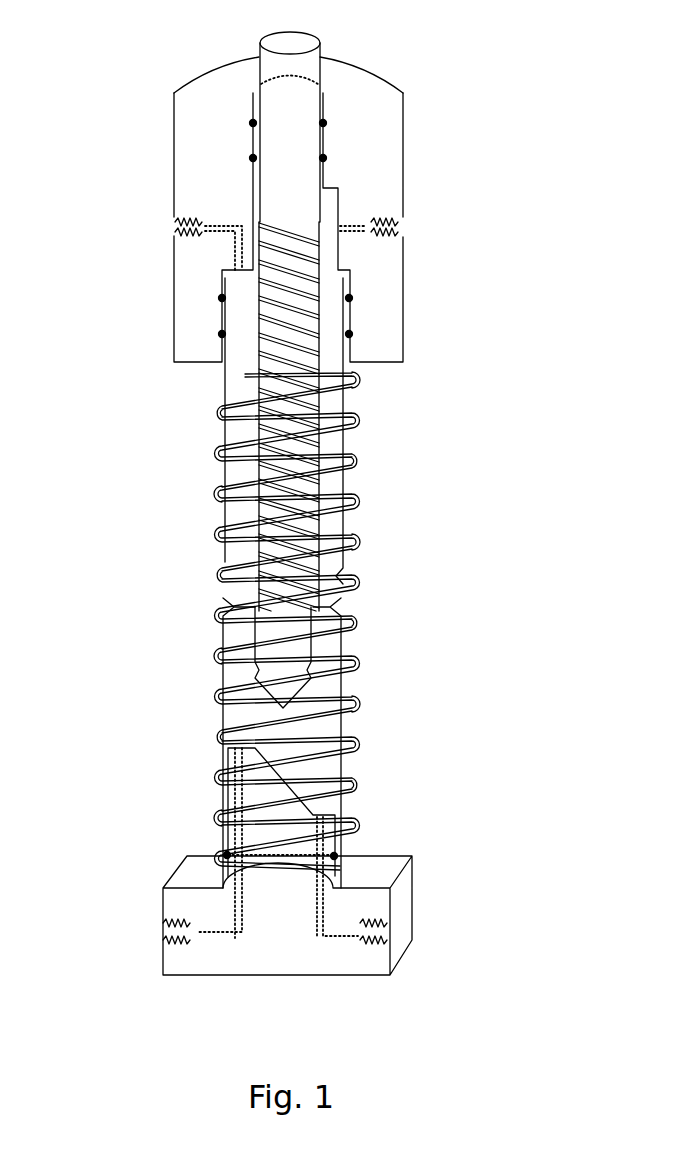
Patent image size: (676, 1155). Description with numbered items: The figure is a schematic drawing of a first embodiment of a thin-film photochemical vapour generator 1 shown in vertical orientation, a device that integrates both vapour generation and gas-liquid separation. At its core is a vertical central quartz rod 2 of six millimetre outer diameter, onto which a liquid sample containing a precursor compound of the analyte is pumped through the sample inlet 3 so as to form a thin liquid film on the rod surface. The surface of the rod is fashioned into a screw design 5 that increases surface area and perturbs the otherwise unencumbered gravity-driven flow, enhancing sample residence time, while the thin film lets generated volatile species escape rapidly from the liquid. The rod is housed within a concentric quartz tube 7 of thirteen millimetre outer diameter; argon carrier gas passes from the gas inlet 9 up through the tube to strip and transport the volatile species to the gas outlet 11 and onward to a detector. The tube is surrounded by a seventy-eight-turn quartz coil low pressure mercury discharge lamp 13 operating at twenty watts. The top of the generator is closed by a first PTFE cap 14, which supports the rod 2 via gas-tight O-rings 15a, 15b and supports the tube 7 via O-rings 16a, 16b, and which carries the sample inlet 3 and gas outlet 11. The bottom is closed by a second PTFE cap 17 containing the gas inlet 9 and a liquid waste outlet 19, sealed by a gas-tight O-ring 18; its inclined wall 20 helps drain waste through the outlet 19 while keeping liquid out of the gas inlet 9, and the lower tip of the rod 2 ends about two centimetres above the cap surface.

The thin-film photochemical vapour generator 1 is at (470, 72).
The central quartz rod 2 is at (293, 42).
The sample inlet 3 is at (401, 228).
The screw design 5 is at (257, 366).
The concentric quartz tube 7 is at (332, 531).
The gas inlet 9 is at (170, 932).
The gas outlet 11 is at (175, 222).
The quartz coil low pressure mercury discharge lamp 13 is at (350, 628).
The first PTFE cap 14 is at (222, 78).
The O-ring 15a is at (323, 123).
The O-ring 15b is at (323, 158).
The O-ring 16a is at (222, 298).
The O-ring 16b is at (222, 334).
The second PTFE cap 17 is at (187, 868).
The O-ring 18 is at (334, 856).
The liquid waste outlet 19 is at (385, 933).
The inclined wall 20 is at (250, 770).